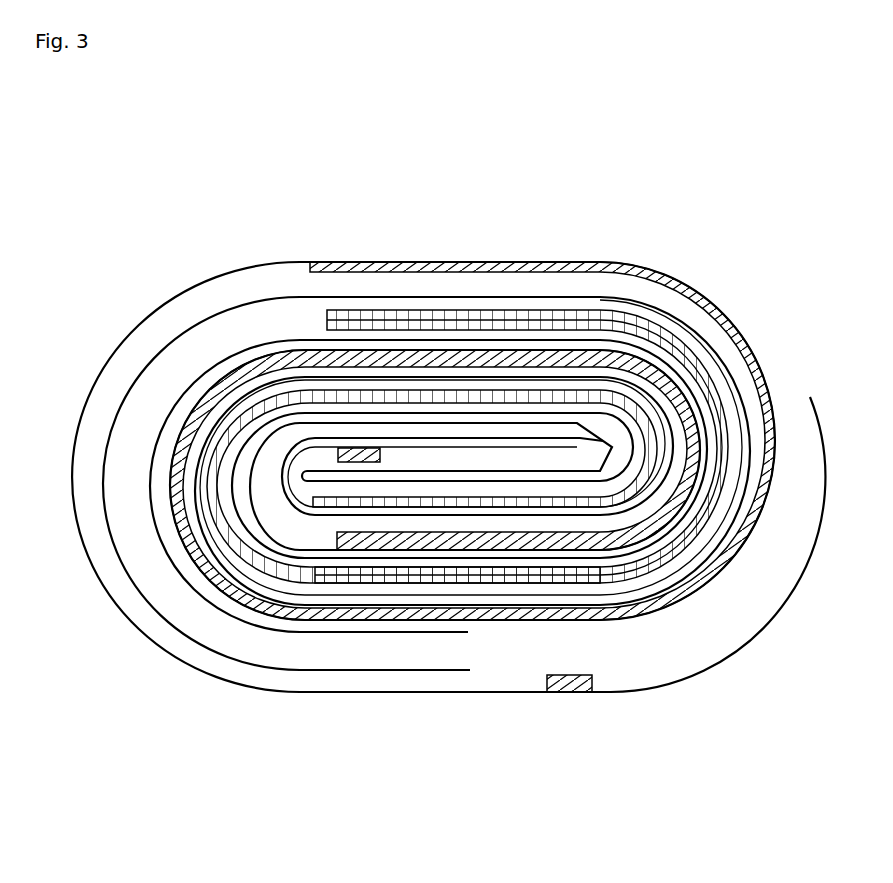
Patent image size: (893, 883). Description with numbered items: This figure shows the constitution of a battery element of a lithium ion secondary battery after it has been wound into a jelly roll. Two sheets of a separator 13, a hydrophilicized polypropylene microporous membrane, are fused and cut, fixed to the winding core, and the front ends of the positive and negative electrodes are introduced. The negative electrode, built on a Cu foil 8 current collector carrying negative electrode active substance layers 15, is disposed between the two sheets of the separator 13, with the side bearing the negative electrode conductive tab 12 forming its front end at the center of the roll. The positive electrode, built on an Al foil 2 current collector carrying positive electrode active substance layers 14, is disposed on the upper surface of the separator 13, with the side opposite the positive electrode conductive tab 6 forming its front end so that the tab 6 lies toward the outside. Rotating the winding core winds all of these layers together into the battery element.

The Al foil 2 is at (690, 673).
The positive electrode conductive tab 6 is at (563, 693).
The Cu foil 8 is at (217, 487).
The negative electrode conductive tab 12 is at (363, 449).
The separator 13 is at (178, 337).
The positive electrode active substance layers 14 is at (552, 262).
The negative electrode active substance layers 15 is at (320, 582).